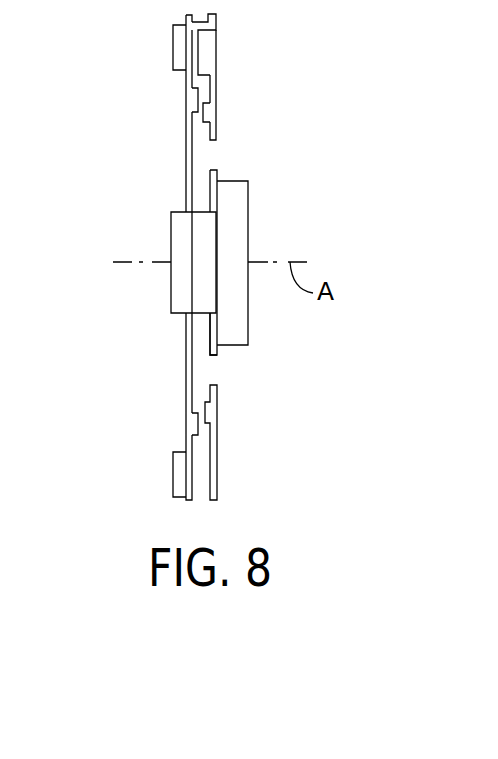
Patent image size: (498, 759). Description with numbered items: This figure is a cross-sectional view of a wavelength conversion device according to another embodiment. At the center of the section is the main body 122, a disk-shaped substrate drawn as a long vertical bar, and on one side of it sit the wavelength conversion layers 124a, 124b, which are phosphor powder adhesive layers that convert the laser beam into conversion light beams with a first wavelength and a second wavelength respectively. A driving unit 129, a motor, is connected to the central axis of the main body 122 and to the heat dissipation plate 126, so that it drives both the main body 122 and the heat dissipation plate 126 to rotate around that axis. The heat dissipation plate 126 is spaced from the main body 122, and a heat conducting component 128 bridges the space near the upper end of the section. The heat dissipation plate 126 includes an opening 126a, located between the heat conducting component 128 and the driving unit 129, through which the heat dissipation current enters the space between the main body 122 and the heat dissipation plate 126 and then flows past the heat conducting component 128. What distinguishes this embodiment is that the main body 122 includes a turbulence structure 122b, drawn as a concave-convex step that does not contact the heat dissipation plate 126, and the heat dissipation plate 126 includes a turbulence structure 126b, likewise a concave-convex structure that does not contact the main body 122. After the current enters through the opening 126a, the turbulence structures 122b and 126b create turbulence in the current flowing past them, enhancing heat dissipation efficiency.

The main body 122 is at (188, 175).
The turbulence structure 122b is at (196, 103).
The wavelength conversion layer 124a is at (178, 44).
The wavelength conversion layer 124b is at (175, 472).
The heat dissipation plate 126 is at (212, 87).
The opening 126a is at (210, 346).
The turbulence structure 126b is at (208, 113).
The heat conducting component 128 is at (196, 44).
The driving unit 129 is at (227, 236).